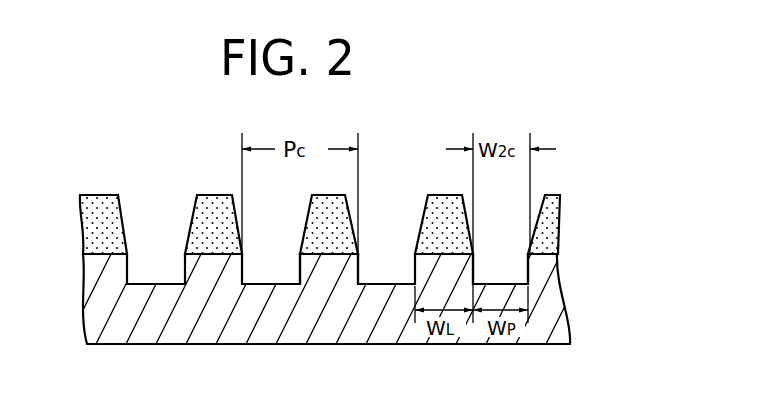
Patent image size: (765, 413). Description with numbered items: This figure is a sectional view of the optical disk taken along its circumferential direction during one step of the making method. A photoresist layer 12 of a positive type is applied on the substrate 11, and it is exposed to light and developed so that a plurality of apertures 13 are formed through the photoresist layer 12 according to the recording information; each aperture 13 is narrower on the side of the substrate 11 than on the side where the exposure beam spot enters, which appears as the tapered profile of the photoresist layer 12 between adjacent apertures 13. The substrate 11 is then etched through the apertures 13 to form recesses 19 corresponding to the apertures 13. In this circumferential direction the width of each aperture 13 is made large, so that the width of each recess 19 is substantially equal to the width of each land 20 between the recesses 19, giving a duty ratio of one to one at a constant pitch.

The substrate 11 is at (550, 326).
The photoresist layer 12 is at (548, 234).
The aperture 13 is at (122, 225).
The recess 19 is at (508, 271).
The land 20 is at (328, 272).